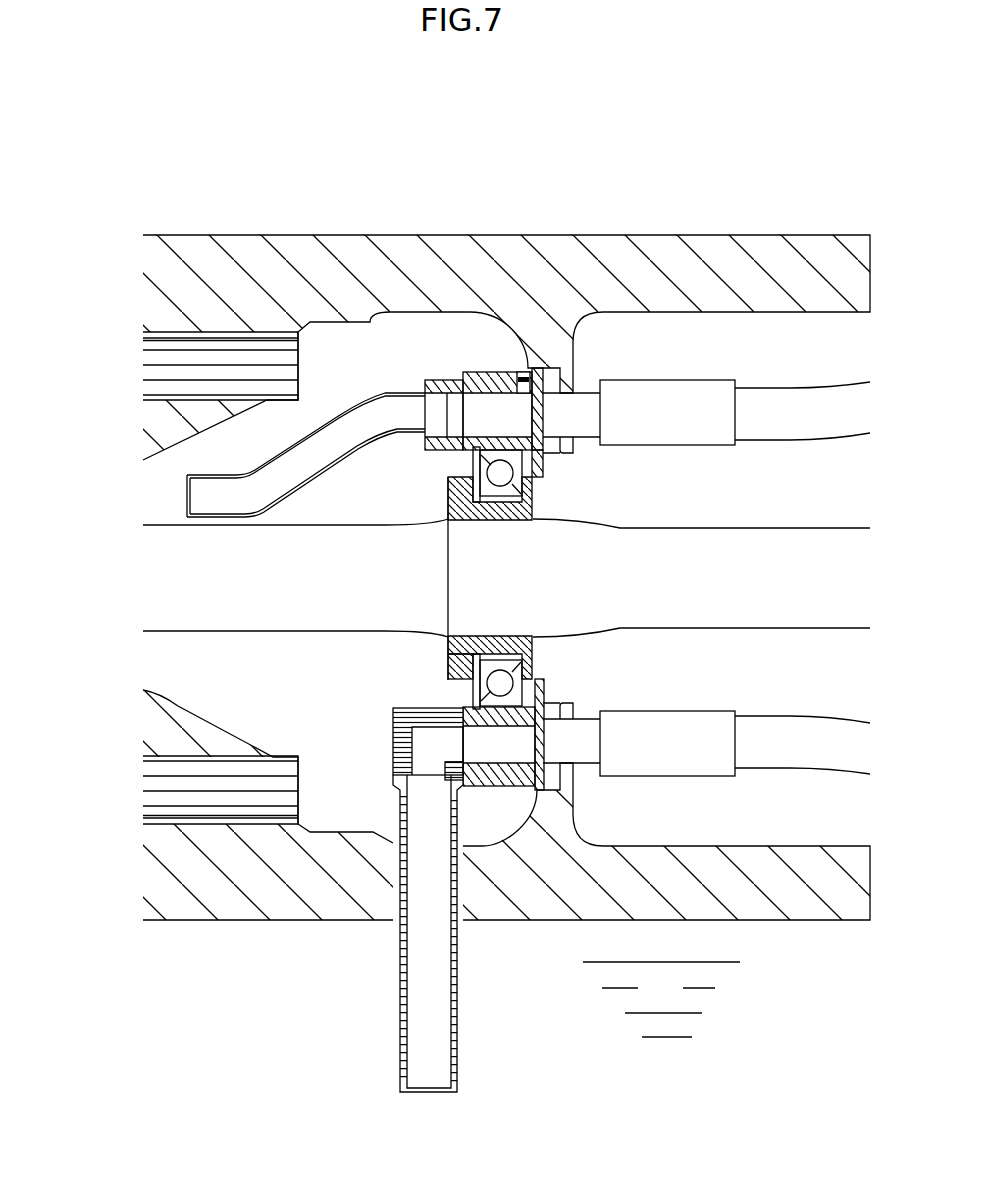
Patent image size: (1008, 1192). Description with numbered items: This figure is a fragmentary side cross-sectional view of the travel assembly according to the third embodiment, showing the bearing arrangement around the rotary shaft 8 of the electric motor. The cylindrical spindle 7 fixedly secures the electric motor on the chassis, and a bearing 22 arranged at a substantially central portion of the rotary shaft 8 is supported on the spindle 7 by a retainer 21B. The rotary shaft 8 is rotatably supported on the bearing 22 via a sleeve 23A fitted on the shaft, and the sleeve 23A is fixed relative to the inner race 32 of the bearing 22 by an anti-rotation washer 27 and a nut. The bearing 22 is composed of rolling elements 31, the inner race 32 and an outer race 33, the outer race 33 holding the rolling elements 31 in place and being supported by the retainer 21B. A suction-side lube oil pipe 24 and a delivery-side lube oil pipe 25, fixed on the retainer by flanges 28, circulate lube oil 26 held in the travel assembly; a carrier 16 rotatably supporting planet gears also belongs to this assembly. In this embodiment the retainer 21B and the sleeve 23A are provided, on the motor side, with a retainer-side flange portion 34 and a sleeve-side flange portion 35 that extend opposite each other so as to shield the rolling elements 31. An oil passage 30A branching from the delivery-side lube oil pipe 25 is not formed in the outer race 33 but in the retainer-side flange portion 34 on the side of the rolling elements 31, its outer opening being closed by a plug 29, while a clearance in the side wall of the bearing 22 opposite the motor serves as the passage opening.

The spindle 7 is at (233, 270).
The rotary shaft 8 is at (775, 608).
The carrier 16 is at (147, 392).
The retainer 21B is at (483, 372).
The bearing 22 is at (532, 683).
The sleeve 23A is at (534, 648).
The suction-side lube oil pipe 24 is at (400, 1027).
The delivery-side lube oil pipe 25 is at (382, 390).
The lube oil 26 is at (661, 999).
The anti-rotation washer 27 is at (467, 687).
The flange 28 is at (438, 380).
The plug 29 is at (520, 376).
The oil passage 30A is at (536, 425).
The rolling elements 31 is at (532, 688).
The inner race 32 is at (449, 660).
The outer race 33 is at (473, 462).
The retainer-side flange portion 34 is at (543, 466).
The sleeve-side flange portion 35 is at (533, 494).